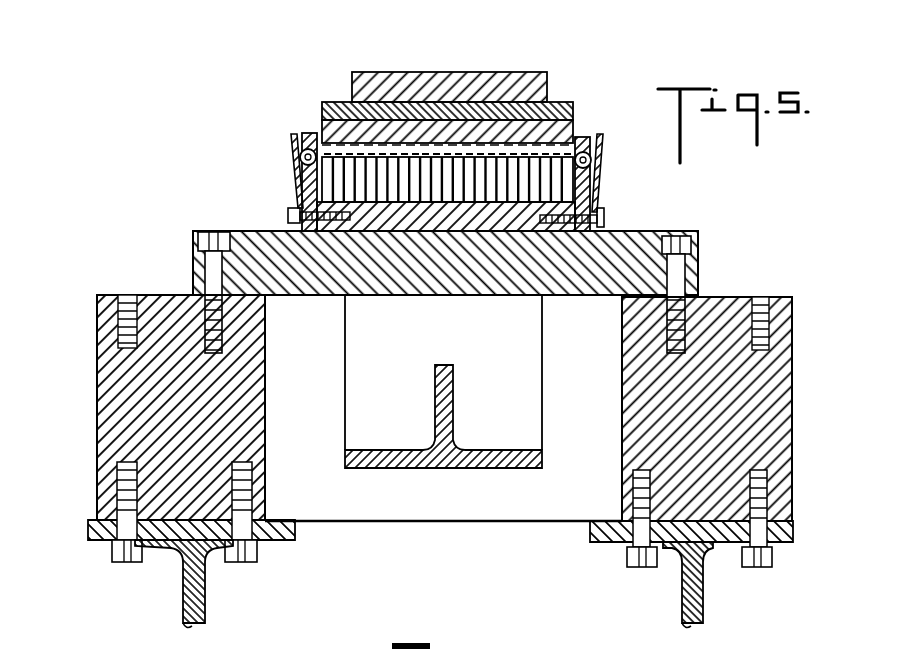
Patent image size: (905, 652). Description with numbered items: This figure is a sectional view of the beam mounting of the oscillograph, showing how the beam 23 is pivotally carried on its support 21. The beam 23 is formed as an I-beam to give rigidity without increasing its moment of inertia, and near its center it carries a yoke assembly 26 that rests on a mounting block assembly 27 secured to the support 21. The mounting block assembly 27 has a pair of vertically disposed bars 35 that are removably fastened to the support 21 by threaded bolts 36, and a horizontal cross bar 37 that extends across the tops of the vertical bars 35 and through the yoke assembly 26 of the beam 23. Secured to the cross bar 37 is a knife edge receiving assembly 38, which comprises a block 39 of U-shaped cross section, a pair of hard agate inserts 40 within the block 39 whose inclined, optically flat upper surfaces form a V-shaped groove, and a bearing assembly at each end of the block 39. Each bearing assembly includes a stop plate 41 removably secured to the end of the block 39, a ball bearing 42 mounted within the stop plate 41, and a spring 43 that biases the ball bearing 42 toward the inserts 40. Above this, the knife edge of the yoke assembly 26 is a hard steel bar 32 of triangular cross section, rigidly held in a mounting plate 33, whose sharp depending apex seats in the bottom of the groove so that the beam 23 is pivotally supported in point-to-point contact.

The support 21 is at (180, 613).
The beam 23 is at (447, 464).
The yoke assembly 26 is at (454, 63).
The mounting block assembly 27 is at (250, 196).
The bar 32 is at (566, 135).
The mounting plate 33 is at (565, 105).
The vertically disposed bars 35 is at (98, 395).
The threaded bolts 36 is at (130, 563).
The cross bar 37 is at (696, 279).
The knife edge receiving assembly 38 is at (620, 187).
The block 39 is at (494, 229).
The inserts 40 is at (410, 196).
The stop plate 41 is at (307, 133).
The ball bearing 42 is at (300, 158).
The spring 43 is at (298, 187).